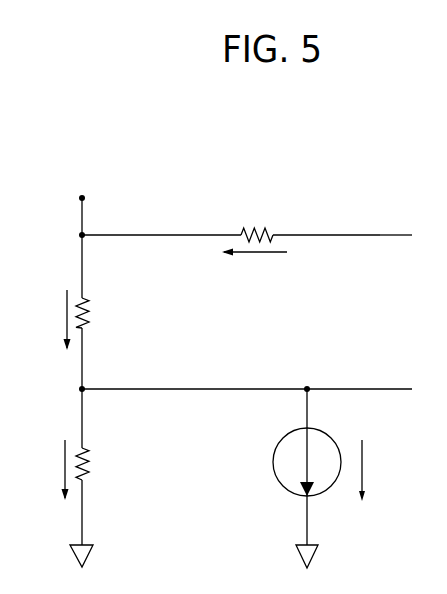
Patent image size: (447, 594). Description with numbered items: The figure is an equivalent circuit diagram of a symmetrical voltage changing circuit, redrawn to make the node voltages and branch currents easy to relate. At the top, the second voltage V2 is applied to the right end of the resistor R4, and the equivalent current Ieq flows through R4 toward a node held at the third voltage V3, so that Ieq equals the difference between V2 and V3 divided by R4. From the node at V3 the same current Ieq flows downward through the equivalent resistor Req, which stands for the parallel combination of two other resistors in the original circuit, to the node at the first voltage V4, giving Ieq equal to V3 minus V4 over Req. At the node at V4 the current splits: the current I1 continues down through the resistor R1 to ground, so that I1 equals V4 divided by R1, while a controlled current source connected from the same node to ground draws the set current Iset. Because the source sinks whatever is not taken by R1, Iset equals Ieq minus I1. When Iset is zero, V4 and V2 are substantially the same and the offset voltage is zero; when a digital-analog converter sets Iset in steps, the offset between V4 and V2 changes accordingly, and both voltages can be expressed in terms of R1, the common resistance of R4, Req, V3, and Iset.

The third voltage V3 is at (86, 231).
The second voltage V2 is at (395, 223).
The first voltage V4 is at (245, 376).
The resistor R4 is at (229, 221).
The equivalent resistor Req is at (108, 343).
The resistor R1 is at (95, 478).
The equivalent current Ieq is at (160, 300).
The current I1 is at (54, 470).
The set current Iset is at (338, 478).